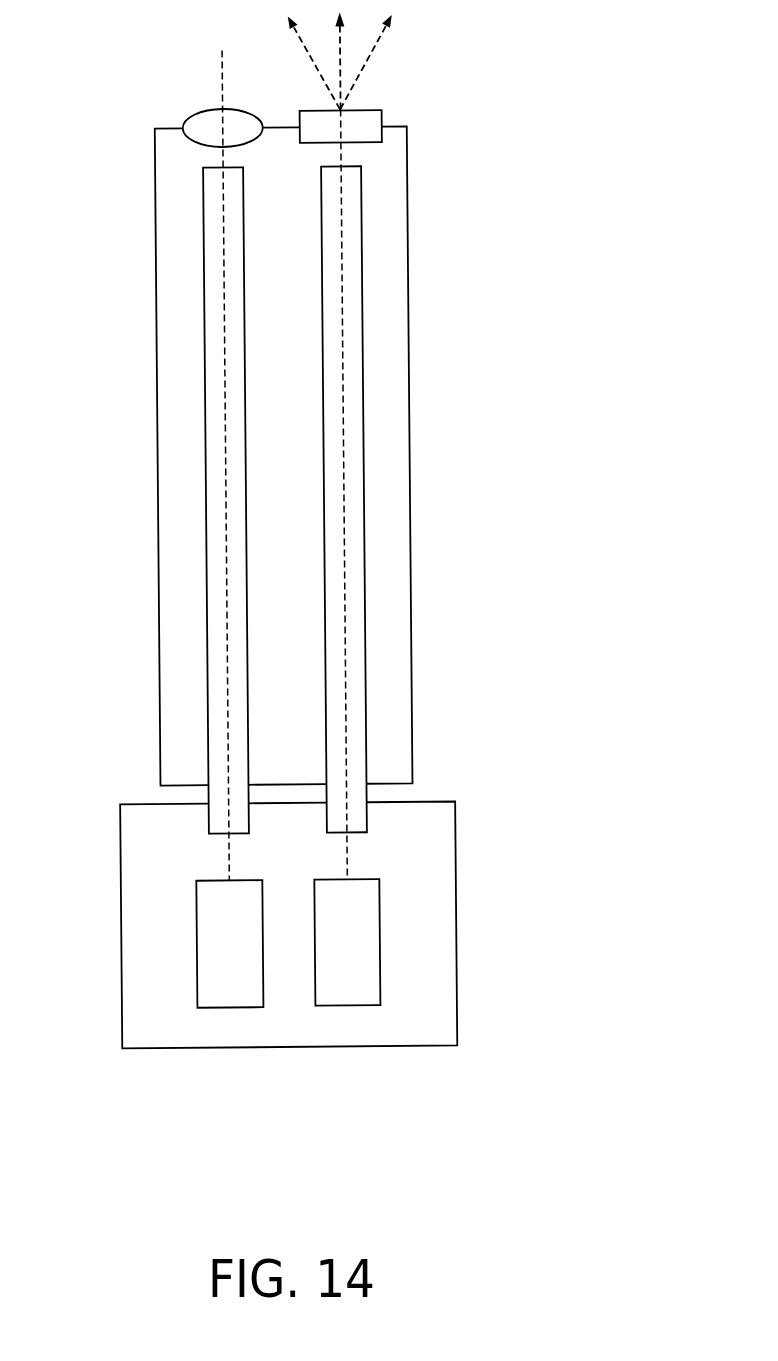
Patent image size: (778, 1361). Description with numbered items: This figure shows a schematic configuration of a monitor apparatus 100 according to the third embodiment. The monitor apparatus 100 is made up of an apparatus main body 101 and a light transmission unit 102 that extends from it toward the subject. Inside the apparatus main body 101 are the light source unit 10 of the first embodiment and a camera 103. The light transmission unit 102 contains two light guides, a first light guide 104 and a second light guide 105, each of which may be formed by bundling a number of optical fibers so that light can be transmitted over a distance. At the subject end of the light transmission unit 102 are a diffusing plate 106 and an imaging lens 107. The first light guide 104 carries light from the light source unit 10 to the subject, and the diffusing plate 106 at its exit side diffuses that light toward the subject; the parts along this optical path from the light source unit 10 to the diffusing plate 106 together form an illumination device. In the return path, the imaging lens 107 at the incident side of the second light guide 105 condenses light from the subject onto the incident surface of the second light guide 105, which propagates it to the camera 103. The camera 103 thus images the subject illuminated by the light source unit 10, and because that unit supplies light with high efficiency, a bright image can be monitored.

The monitor apparatus 100 is at (523, 201).
The apparatus main body 101 is at (454, 828).
The light transmission unit 102 is at (409, 413).
The camera 103 is at (193, 944).
The light source unit 10 is at (376, 925).
The first light guide 104 is at (364, 337).
The second light guide 105 is at (206, 337).
The diffusing plate 106 is at (366, 110).
The imaging lens 107 is at (203, 108).